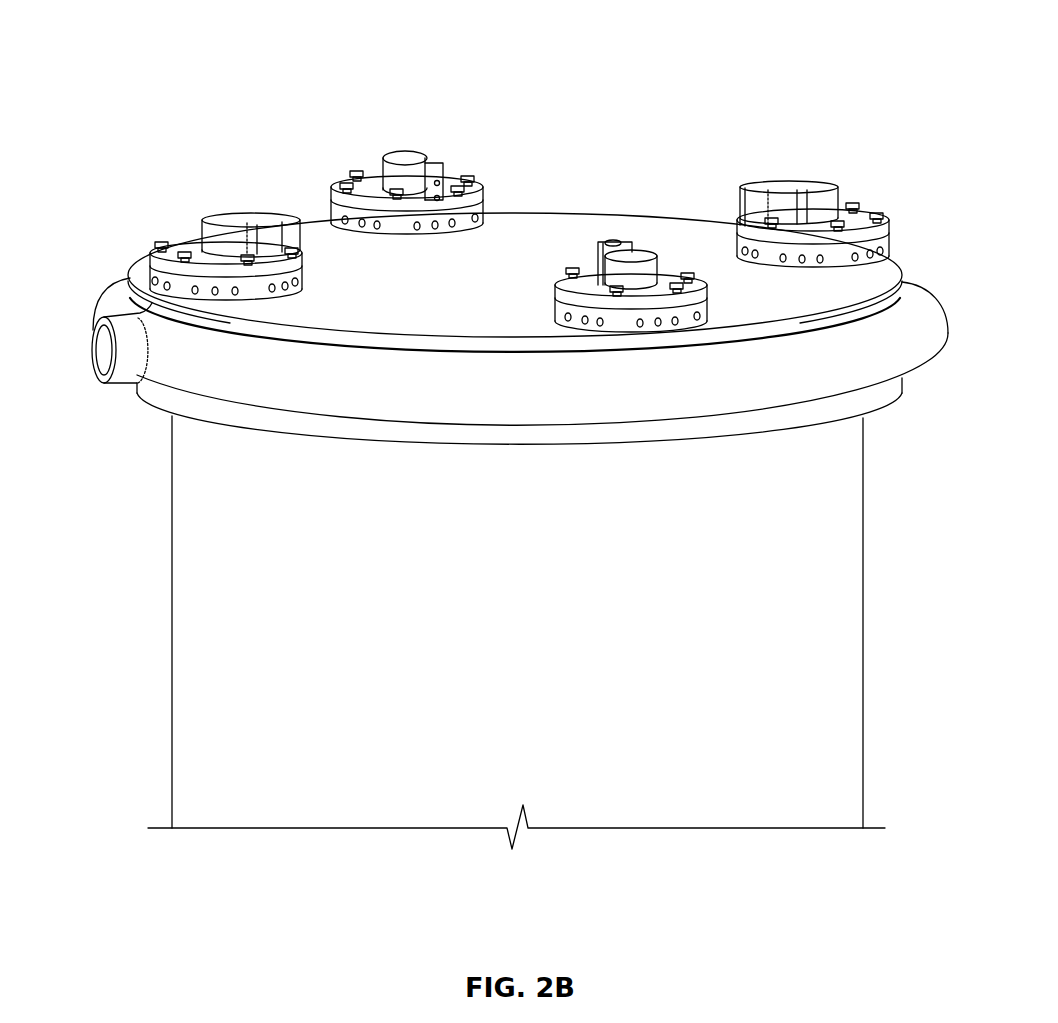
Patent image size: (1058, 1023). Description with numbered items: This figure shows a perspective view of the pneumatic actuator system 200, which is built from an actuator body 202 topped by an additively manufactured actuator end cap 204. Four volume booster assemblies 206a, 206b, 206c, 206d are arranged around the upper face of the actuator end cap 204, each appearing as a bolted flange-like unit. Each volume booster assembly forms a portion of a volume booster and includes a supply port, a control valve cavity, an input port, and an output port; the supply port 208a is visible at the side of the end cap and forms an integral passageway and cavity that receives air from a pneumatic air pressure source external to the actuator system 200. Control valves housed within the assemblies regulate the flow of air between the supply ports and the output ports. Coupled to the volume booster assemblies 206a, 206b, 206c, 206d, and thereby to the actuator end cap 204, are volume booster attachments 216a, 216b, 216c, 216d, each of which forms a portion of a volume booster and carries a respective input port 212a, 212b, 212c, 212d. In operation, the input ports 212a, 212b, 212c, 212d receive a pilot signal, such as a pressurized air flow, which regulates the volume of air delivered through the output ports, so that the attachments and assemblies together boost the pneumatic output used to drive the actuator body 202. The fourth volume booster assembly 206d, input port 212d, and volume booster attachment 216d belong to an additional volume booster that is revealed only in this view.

The actuator system 200 is at (143, 46).
The actuator body 202 is at (864, 580).
The actuator end cap 204 is at (534, 248).
The volume booster assembly 206a is at (130, 270).
The volume booster assembly 206b is at (908, 240).
The volume booster assembly 206c is at (505, 222).
The volume booster assembly 206d is at (538, 319).
The supply port 208a is at (102, 380).
The input port 212a is at (290, 178).
The input port 212b is at (782, 189).
The input port 212c is at (420, 157).
The input port 212d is at (621, 243).
The volume booster attachment 216a is at (182, 190).
The volume booster attachment 216b is at (856, 170).
The volume booster attachment 216c is at (371, 140).
The volume booster attachment 216d is at (661, 241).